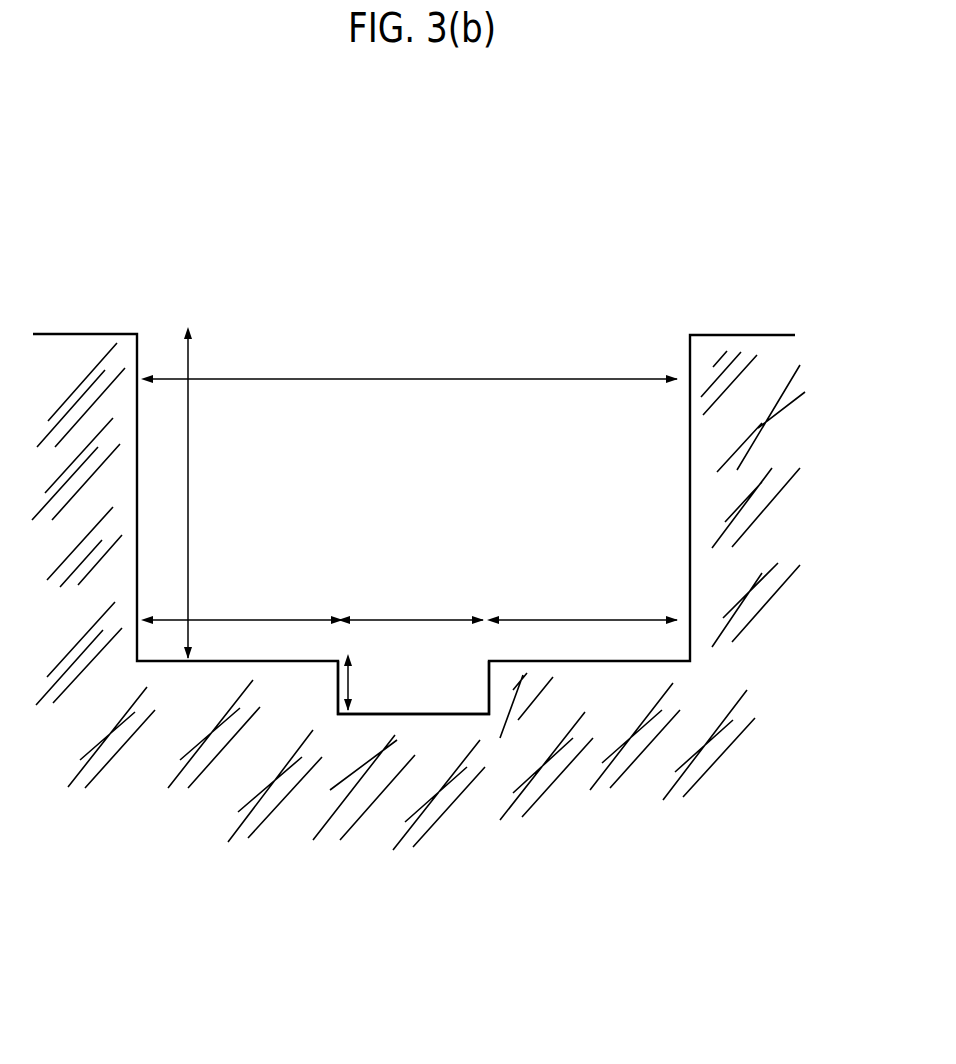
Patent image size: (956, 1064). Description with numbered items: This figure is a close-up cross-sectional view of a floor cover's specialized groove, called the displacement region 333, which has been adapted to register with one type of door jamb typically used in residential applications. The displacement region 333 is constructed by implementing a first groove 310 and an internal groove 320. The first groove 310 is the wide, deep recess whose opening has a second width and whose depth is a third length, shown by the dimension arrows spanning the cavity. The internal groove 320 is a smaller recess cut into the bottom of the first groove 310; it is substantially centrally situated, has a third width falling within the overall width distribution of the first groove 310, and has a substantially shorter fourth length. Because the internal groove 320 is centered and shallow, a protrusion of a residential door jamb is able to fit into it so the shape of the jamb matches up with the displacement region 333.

The first groove 310 is at (677, 597).
The internal groove 320 is at (427, 702).
The displacement region 333 is at (230, 222).